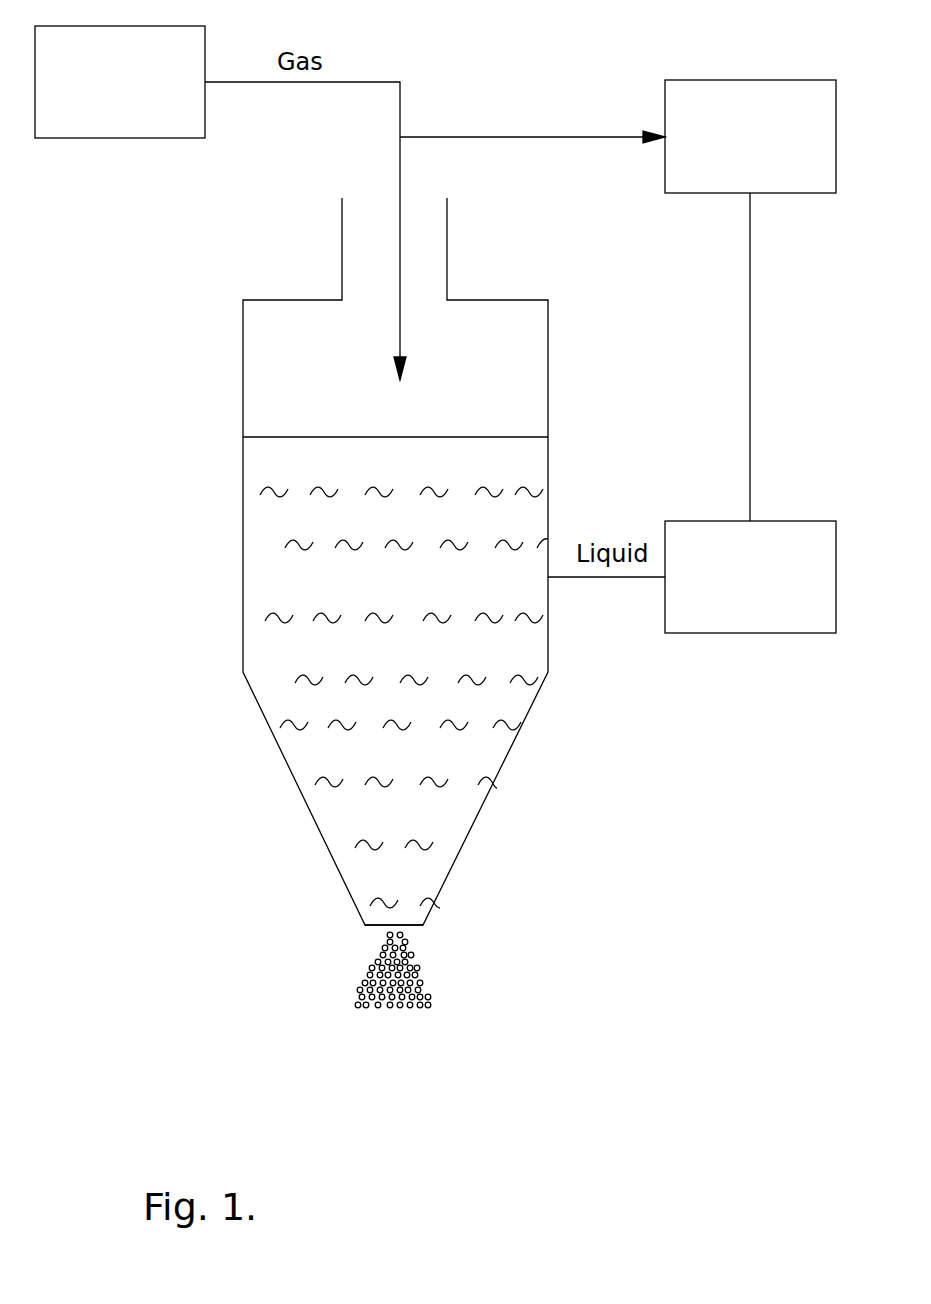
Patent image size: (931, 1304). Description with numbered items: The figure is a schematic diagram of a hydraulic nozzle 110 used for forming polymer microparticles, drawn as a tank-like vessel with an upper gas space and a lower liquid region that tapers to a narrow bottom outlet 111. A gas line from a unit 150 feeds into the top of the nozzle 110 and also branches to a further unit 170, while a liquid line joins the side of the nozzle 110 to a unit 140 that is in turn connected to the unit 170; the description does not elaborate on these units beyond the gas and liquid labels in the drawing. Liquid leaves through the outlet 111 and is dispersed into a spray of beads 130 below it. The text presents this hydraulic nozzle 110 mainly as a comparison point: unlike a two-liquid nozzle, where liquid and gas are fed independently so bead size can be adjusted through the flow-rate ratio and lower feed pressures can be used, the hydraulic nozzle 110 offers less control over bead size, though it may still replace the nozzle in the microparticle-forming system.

The nozzle 110 is at (242, 376).
The outlet 111 is at (378, 927).
The particles 130 is at (420, 982).
The liquid supply unit 140 is at (740, 633).
The gas supply unit 150 is at (120, 138).
The gas treatment unit 170 is at (745, 80).